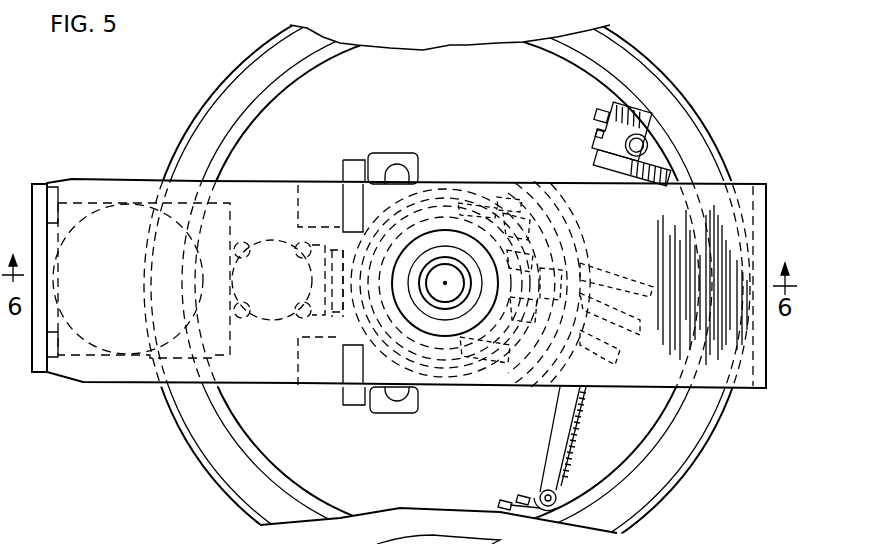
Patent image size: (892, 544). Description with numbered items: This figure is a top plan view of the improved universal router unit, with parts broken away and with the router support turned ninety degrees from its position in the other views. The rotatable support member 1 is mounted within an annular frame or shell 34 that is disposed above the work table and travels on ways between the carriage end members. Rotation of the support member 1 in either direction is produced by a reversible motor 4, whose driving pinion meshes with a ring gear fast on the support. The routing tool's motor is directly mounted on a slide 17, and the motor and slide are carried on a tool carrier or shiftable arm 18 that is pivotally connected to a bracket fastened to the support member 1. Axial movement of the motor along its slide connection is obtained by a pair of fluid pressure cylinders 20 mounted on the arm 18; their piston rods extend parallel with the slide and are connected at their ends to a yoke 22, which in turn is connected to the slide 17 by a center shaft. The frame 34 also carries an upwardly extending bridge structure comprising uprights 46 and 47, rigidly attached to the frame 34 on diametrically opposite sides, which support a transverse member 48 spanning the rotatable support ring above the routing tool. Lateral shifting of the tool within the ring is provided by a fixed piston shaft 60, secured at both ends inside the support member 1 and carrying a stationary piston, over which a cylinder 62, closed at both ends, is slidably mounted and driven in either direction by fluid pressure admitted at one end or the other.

The rotatable support member 1 is at (283, 477).
The reversible motor 4 is at (110, 232).
The slide 17 is at (296, 359).
The tool carrier or shiftable arm 18 is at (343, 396).
The fluid pressure cylinders 20 is at (396, 155).
The yoke 22 is at (406, 178).
The annular frame or shell 34 is at (221, 470).
The upright 46 is at (42, 217).
The upright 47 is at (764, 242).
The transverse member 48 is at (709, 197).
The fixed piston shaft 60 is at (575, 432).
The cylinder 62 is at (594, 178).